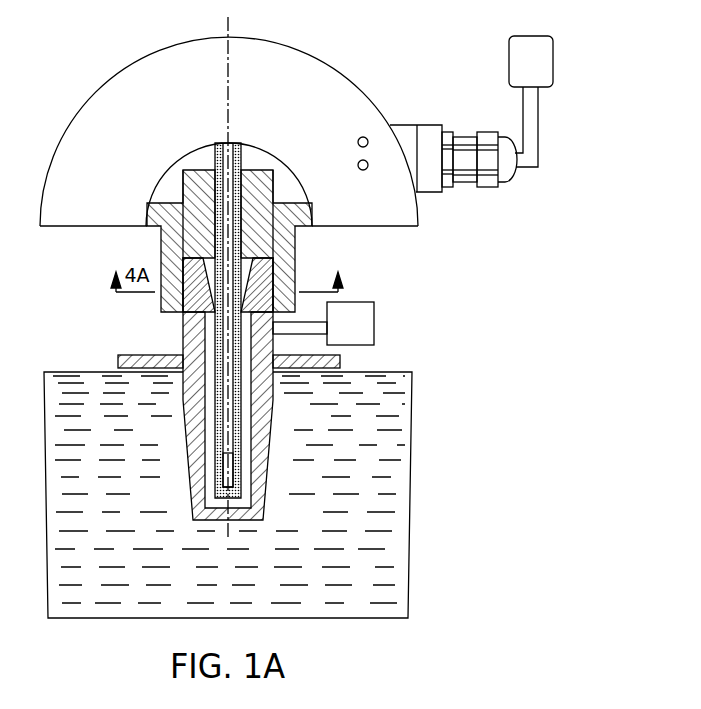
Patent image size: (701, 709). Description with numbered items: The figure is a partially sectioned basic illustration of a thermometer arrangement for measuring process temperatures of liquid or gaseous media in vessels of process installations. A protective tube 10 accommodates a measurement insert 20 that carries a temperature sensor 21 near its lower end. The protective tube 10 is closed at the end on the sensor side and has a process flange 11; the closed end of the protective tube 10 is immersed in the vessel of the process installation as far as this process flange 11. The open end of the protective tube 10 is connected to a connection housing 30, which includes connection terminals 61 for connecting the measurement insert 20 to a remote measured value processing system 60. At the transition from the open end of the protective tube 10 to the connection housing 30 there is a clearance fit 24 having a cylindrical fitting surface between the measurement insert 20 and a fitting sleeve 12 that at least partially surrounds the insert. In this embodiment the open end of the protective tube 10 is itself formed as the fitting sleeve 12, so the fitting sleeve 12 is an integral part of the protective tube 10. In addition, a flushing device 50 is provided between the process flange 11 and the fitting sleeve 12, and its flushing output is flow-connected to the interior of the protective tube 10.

The protective tube 10 is at (272, 422).
The process flange 11 is at (350, 358).
The fitting sleeve 12 is at (262, 280).
The measurement insert 20 is at (236, 433).
The temperature sensor 21 is at (236, 480).
The clearance fit 24 is at (210, 285).
The connection housing 30 is at (85, 195).
The flushing device 50 is at (350, 323).
The remote measured value processing system 60 is at (509, 52).
The connection terminals 61 is at (341, 144).